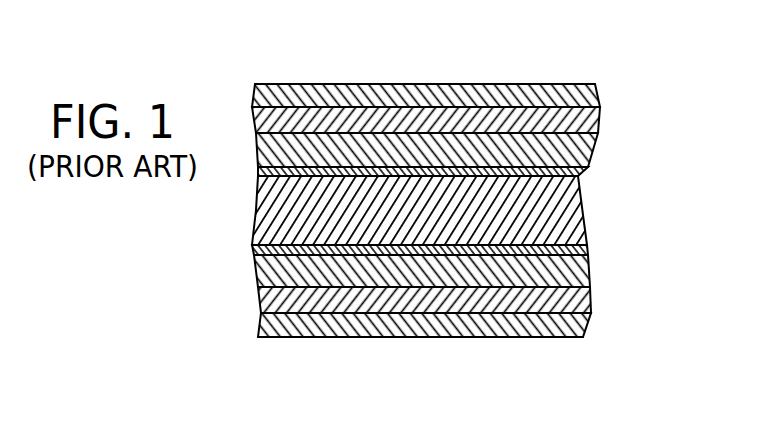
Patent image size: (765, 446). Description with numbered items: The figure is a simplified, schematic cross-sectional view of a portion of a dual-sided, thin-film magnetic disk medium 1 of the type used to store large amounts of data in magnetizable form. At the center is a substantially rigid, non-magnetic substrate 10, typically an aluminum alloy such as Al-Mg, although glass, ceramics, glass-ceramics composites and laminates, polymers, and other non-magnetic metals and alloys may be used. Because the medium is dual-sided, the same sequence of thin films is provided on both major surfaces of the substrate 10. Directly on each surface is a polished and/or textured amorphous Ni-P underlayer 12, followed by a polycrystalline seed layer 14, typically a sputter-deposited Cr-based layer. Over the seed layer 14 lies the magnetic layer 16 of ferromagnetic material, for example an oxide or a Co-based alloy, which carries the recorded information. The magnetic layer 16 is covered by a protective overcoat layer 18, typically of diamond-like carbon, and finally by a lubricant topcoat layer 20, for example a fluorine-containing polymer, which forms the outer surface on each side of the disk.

The dual-sided thin-film magnetic disk medium 1 is at (308, 65).
The substrate 10 is at (578, 216).
The Ni-P underlayer 12 is at (577, 173).
The seed layer 14 is at (590, 155).
The magnetic layer 16 is at (598, 127).
The protective overcoat layer 18 is at (597, 95).
The lubricant topcoat layer 20 is at (533, 85).